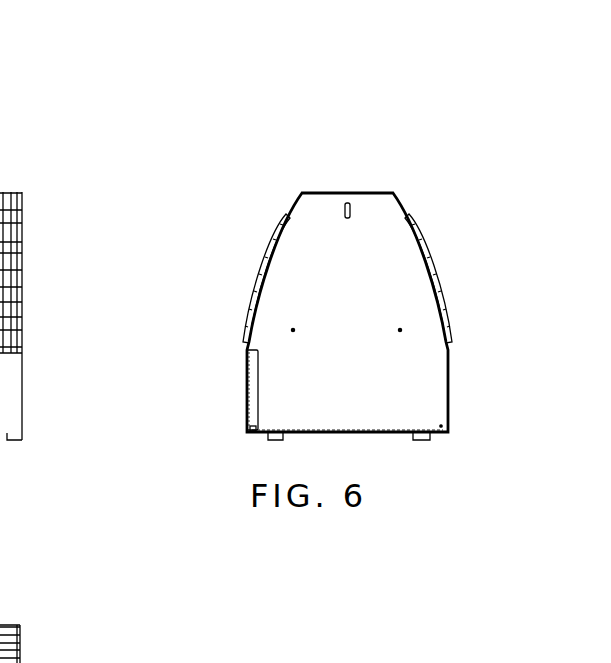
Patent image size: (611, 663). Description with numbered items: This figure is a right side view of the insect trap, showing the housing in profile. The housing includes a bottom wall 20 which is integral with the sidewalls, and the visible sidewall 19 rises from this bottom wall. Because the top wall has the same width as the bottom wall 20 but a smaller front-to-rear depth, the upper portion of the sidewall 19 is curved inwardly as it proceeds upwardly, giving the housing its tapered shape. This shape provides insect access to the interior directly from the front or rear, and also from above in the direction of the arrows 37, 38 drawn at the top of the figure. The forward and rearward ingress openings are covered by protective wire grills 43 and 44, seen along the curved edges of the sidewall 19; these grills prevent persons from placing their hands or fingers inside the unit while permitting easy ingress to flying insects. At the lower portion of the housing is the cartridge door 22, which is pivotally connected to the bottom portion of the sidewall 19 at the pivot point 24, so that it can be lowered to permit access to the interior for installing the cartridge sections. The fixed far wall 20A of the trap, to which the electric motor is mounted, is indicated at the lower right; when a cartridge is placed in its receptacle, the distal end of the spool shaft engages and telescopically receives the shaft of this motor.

The sidewall 19 is at (347, 312).
The bottom wall 20 is at (393, 436).
The fixed far wall 20A is at (453, 420).
The cartridge door 22 is at (244, 408).
The pivot connection 24 is at (246, 434).
The arrow 37 is at (281, 195).
The arrow 38 is at (416, 195).
The protective wire grill 43 is at (259, 233).
The protective wire grill 44 is at (436, 236).